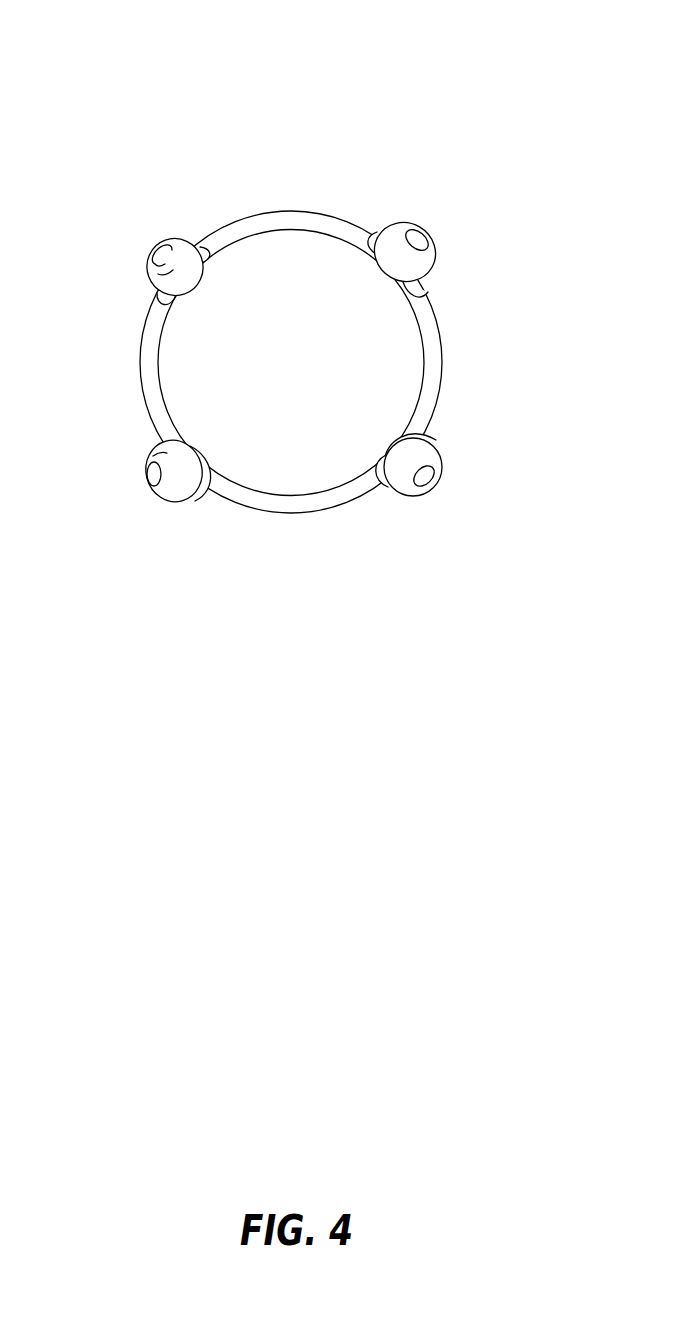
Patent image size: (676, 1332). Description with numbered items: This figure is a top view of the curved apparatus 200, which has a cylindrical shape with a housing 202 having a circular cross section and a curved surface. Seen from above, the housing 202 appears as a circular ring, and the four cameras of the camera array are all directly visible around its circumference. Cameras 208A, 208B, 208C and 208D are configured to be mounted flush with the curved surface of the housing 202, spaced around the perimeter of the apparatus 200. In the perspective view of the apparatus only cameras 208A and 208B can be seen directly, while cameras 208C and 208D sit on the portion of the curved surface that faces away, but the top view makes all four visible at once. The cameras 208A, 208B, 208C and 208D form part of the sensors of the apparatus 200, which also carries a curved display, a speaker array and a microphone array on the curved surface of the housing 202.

The curved apparatus 200 is at (307, 34).
The housing 202 is at (298, 220).
The camera 208A is at (395, 238).
The camera 208B is at (427, 463).
The camera 208C is at (148, 462).
The camera 208D is at (148, 283).